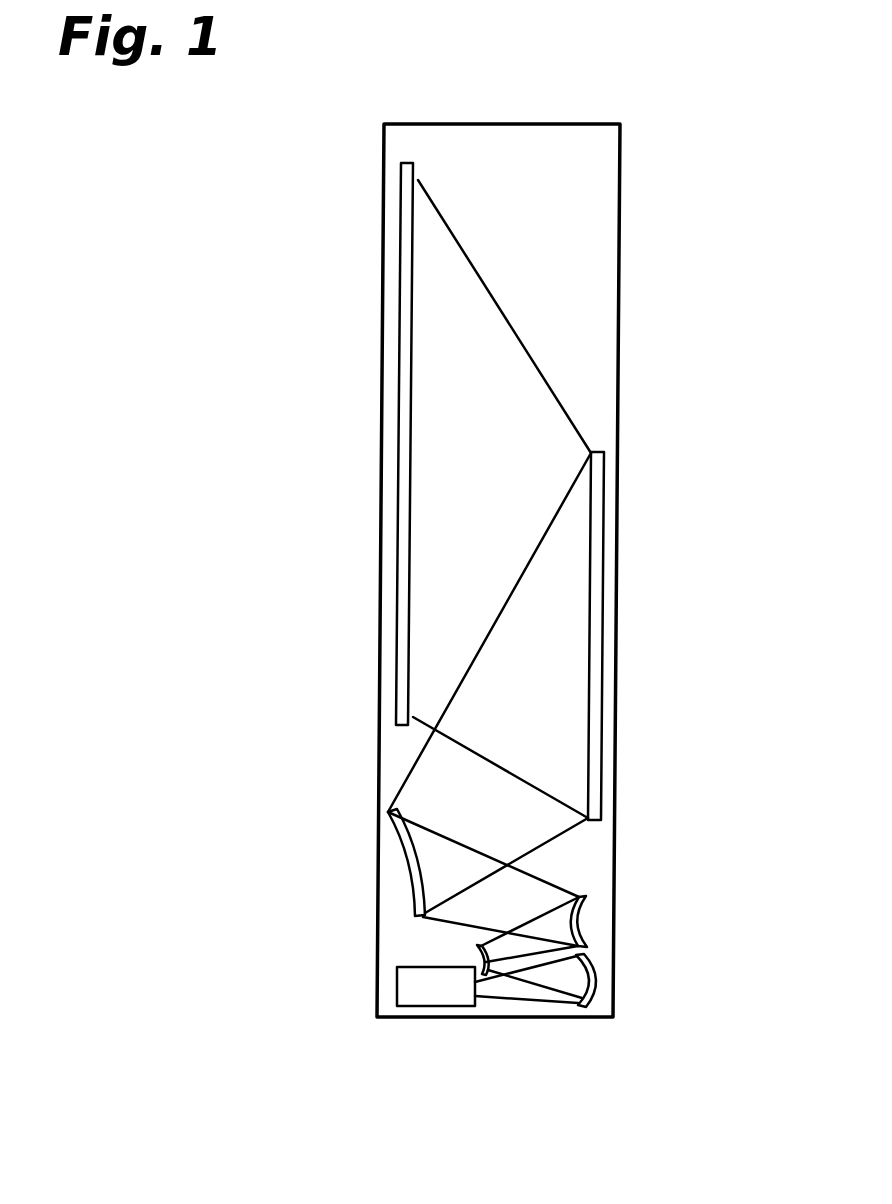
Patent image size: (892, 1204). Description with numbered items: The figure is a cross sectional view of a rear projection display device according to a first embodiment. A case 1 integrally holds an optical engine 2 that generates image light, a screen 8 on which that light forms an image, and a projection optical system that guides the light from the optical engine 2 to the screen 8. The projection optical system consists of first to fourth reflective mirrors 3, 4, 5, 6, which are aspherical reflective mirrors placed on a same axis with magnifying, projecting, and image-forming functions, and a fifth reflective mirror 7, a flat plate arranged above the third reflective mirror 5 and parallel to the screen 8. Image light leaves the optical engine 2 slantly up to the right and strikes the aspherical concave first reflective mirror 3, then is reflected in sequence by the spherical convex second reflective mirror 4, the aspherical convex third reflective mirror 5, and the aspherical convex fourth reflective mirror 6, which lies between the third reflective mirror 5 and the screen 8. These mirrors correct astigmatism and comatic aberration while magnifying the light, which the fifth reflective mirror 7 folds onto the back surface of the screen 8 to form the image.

The case 1 is at (618, 690).
The optical engine 2 is at (418, 992).
The first reflective mirror 3 is at (595, 982).
The second reflective mirror 4 is at (482, 955).
The third reflective mirror 5 is at (581, 918).
The fourth reflective mirror 6 is at (412, 860).
The fifth reflective mirror 7 is at (597, 543).
The screen 8 is at (402, 395).